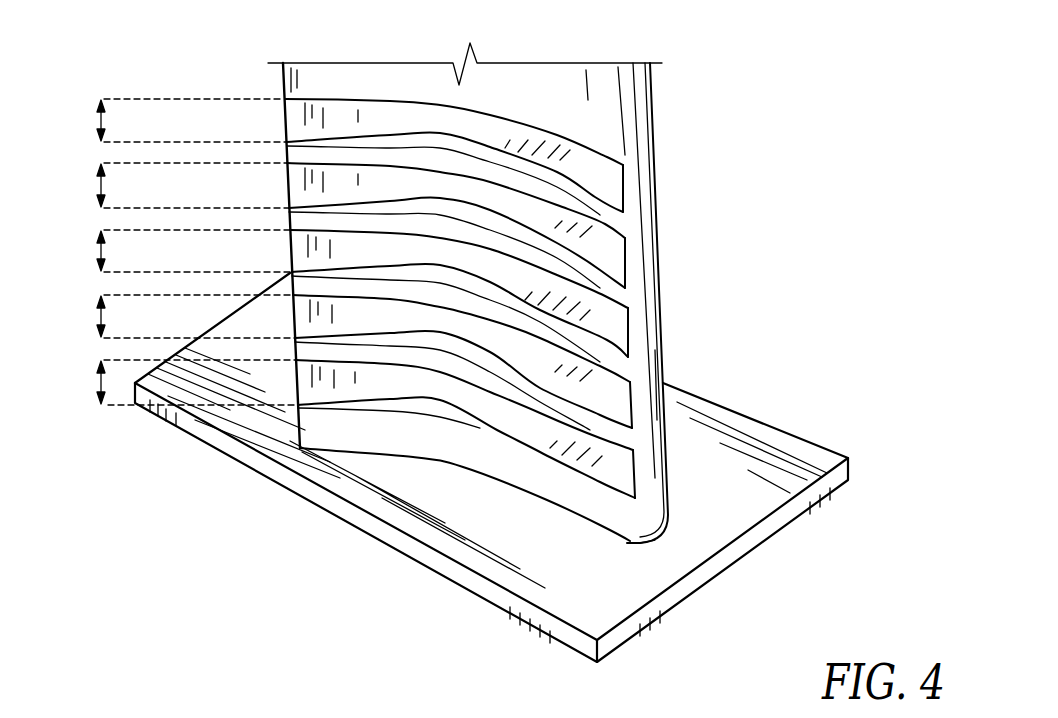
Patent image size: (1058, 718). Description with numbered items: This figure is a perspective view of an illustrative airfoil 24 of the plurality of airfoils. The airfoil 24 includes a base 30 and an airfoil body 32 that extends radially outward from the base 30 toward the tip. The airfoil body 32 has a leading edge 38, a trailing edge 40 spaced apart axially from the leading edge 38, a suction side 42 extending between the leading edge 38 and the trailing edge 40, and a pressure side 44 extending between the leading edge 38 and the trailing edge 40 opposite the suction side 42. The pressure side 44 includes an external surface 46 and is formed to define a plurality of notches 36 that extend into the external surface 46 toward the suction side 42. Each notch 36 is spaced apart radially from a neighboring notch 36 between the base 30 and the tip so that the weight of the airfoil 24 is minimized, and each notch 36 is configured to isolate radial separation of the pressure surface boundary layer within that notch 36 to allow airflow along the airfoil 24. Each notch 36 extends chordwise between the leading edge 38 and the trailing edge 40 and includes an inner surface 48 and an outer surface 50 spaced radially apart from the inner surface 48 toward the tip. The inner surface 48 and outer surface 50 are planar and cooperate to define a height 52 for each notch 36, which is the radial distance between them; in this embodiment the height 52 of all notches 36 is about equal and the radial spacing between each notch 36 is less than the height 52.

The airfoil 24 is at (120, 87).
The base 30 is at (828, 450).
The airfoil body 32 is at (277, 92).
The notches 36 is at (292, 118).
The leading edge 38 is at (657, 350).
The trailing edge 40 is at (288, 252).
The suction side 42 is at (657, 123).
The pressure side 44 is at (371, 442).
The external surface 46 is at (608, 517).
The inner surface 48 is at (613, 197).
The outer surface 50 is at (356, 163).
The height 52 is at (100, 103).